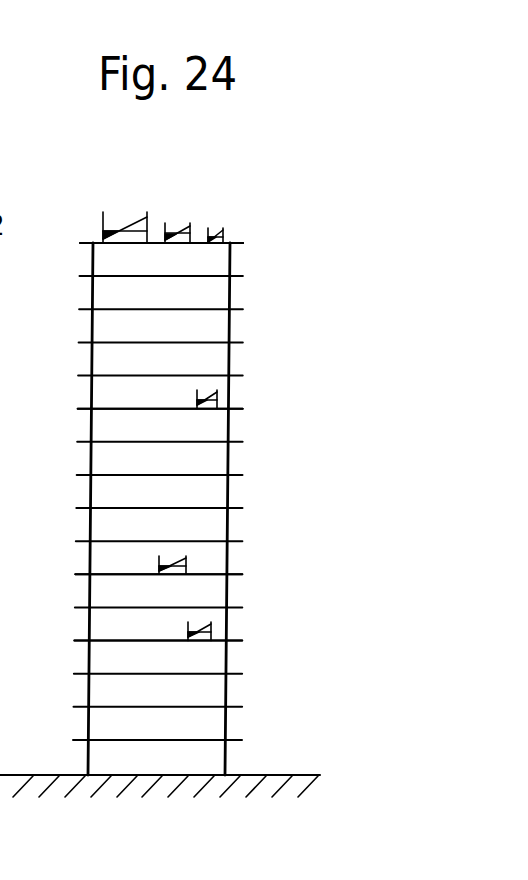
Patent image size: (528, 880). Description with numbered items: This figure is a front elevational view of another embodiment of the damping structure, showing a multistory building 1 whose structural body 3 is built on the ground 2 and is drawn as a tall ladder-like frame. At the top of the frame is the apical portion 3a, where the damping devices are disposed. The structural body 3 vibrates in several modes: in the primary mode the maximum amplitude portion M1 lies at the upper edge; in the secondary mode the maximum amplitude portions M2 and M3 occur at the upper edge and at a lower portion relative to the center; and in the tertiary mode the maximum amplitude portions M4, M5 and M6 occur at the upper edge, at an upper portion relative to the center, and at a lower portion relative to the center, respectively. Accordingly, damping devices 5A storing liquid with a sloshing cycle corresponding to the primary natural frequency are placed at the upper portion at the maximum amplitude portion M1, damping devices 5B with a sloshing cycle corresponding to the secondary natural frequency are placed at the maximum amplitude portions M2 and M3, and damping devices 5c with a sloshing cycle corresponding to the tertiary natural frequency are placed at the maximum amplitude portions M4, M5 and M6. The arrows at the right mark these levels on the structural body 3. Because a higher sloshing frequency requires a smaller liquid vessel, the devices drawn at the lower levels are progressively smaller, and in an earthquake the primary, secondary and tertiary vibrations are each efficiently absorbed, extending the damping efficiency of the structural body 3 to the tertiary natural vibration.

The multistory building 1 is at (301, 315).
The ground 2 is at (310, 775).
The structural body 3 is at (67, 355).
The apical portion 3a is at (232, 243).
The damping devices 5A is at (103, 213).
The damping devices 5B is at (191, 225).
The damping devices 5c is at (224, 229).
The maximum amplitude portion M1 is at (287, 228).
The maximum amplitude portion M2 is at (287, 228).
The maximum amplitude portion M3 is at (304, 565).
The maximum amplitude portion M4 is at (312, 227).
The maximum amplitude portion M5 is at (302, 399).
The maximum amplitude portion M6 is at (297, 636).